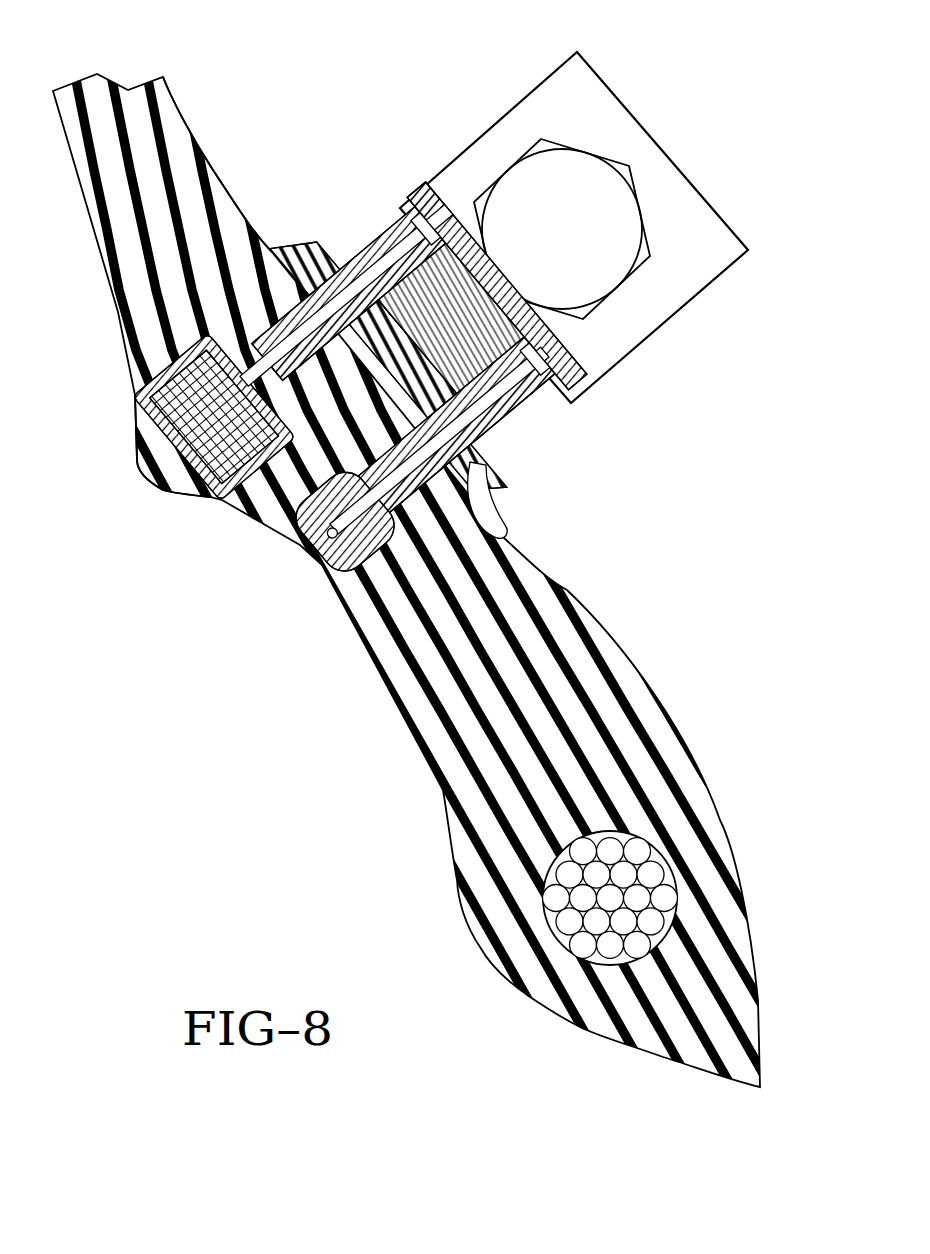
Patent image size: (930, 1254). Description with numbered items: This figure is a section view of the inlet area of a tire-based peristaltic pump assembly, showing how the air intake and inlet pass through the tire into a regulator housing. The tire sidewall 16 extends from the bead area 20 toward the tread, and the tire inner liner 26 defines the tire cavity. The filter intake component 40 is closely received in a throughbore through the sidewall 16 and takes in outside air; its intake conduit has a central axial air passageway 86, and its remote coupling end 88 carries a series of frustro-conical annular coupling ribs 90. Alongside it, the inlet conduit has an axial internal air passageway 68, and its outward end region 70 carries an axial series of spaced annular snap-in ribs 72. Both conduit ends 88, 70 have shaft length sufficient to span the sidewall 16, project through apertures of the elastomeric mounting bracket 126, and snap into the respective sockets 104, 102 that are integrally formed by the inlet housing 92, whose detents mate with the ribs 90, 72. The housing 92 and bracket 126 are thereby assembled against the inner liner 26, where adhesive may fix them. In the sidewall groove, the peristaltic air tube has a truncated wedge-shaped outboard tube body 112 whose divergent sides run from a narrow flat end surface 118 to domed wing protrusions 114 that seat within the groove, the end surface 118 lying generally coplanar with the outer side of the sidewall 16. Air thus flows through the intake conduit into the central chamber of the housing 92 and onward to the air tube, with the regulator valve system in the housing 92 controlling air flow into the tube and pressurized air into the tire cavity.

The sidewall 16 is at (76, 190).
The bead area 20 is at (620, 880).
The tire inner liner 26 is at (178, 97).
The filter intake component 40 is at (142, 451).
The axial internal air passageway 68 is at (500, 412).
The outward end region of the inlet conduit 70 is at (566, 366).
The annular snap-in ribs 72 is at (530, 395).
The central axial air passageway 86 is at (362, 284).
The remote coupling end of the intake conduit 88 is at (409, 206).
The frustro-conical annular coupling ribs 90 is at (392, 236).
The inlet housing 92 is at (692, 178).
The socket 102 is at (484, 455).
The socket 104 is at (333, 270).
The outboard tube body 112 is at (324, 562).
The wing protrusions 114 is at (305, 492).
The flat end surface 118 is at (326, 546).
The mounting bracket 126 is at (500, 530).